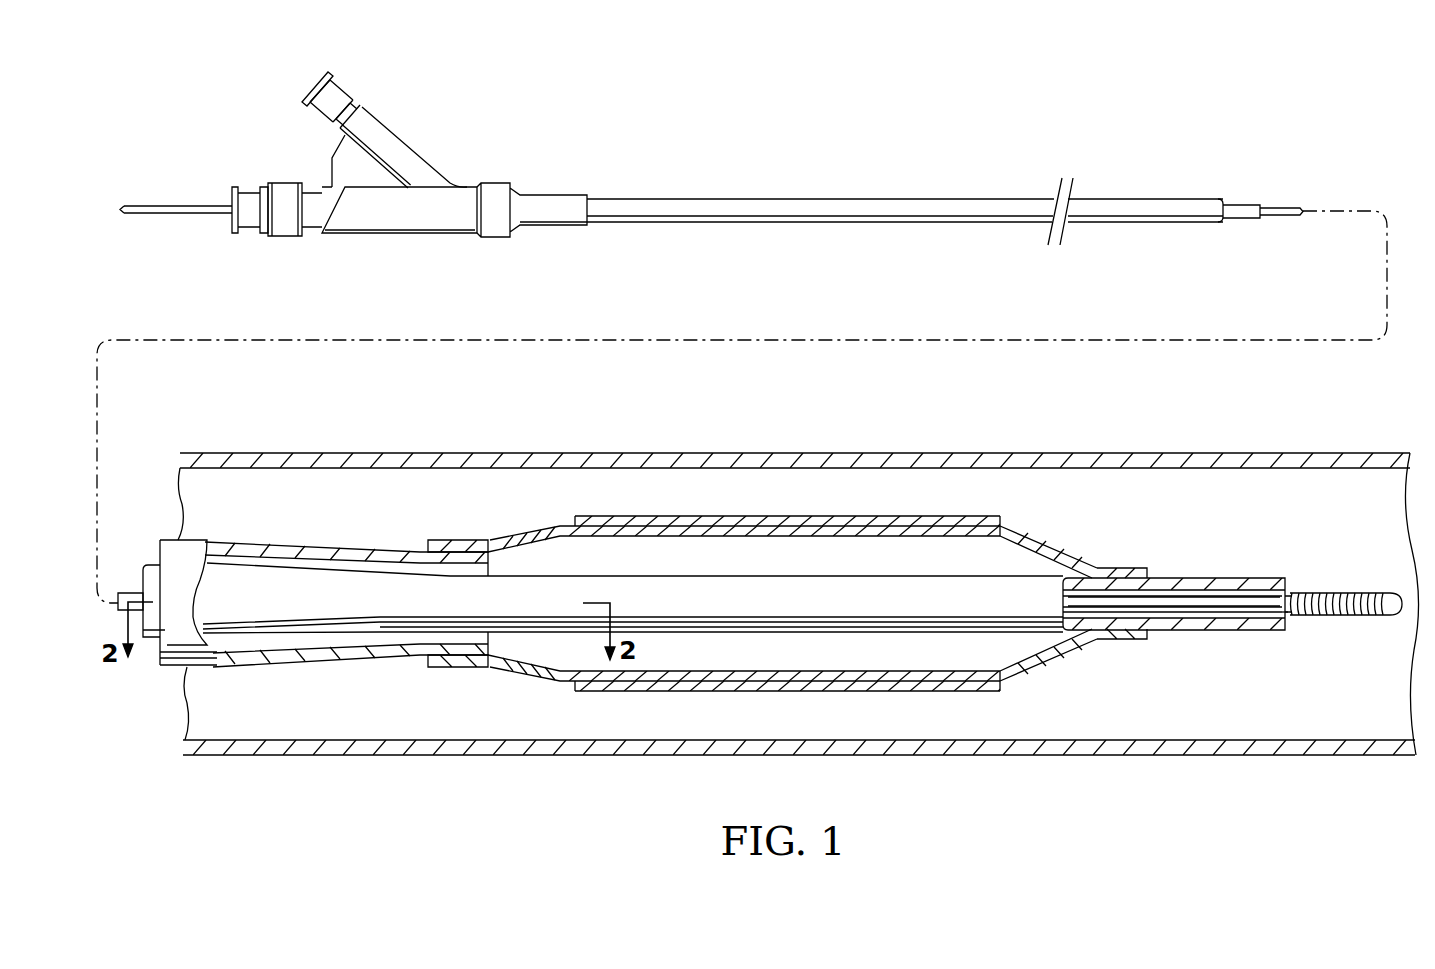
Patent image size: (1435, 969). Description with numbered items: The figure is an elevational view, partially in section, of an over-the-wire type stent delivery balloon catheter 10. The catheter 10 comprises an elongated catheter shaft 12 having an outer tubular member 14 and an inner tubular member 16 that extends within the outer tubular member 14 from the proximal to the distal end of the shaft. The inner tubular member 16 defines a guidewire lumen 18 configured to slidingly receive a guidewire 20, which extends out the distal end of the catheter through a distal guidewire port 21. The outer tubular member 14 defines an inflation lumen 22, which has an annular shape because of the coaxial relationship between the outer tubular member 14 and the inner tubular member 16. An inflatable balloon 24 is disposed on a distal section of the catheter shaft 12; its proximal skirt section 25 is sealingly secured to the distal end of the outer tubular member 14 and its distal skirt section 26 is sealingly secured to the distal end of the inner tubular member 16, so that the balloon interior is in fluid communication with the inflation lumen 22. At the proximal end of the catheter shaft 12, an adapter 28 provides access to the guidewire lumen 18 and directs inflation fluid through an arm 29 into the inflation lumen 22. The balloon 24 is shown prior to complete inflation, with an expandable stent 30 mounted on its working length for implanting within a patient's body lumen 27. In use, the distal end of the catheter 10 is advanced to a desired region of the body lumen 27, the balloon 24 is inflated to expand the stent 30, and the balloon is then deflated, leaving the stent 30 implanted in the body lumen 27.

The stent delivery balloon catheter 10 is at (1005, 141).
The catheter shaft 12 is at (812, 199).
The outer tubular member 14 is at (1185, 200).
The inner tubular member 16 is at (1246, 219).
The guidewire lumen 18 is at (1170, 613).
The guidewire 20 is at (181, 207).
The distal guidewire port 21 is at (1288, 618).
The inflation lumen 22 is at (317, 643).
The inflatable balloon 24 is at (1040, 546).
The proximal skirt section 25 is at (455, 540).
The distal skirt section 26 is at (1119, 568).
The body lumen 27 is at (1283, 520).
The adapter 28 is at (468, 186).
The arm 29 is at (387, 124).
The expandable stent 30 is at (714, 516).